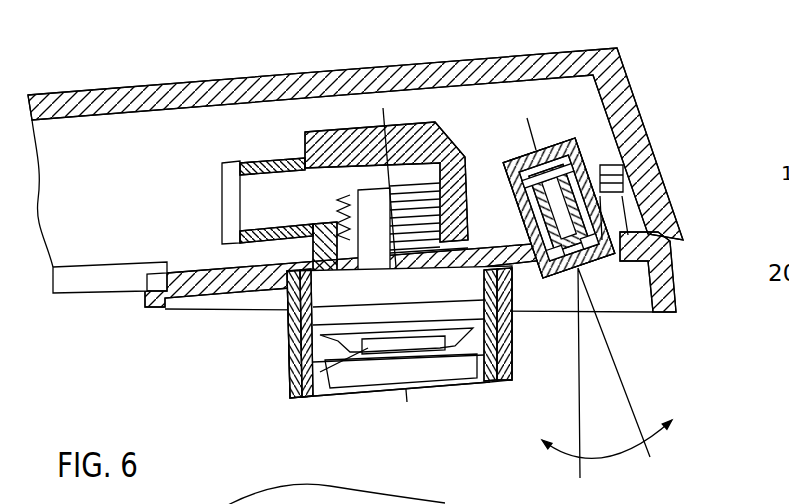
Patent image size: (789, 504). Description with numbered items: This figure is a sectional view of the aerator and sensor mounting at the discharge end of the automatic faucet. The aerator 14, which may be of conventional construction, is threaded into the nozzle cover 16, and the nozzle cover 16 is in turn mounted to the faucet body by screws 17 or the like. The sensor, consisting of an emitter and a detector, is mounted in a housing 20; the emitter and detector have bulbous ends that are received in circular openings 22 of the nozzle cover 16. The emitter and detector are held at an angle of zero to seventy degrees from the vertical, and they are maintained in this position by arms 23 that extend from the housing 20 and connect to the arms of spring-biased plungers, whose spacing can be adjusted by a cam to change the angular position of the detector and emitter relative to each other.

The aerator 14 is at (293, 390).
The nozzle cover 16 is at (667, 288).
The screws 17 is at (318, 503).
The housing 20 is at (542, 278).
The circular openings 22 is at (667, 313).
The arms 23 is at (647, 150).